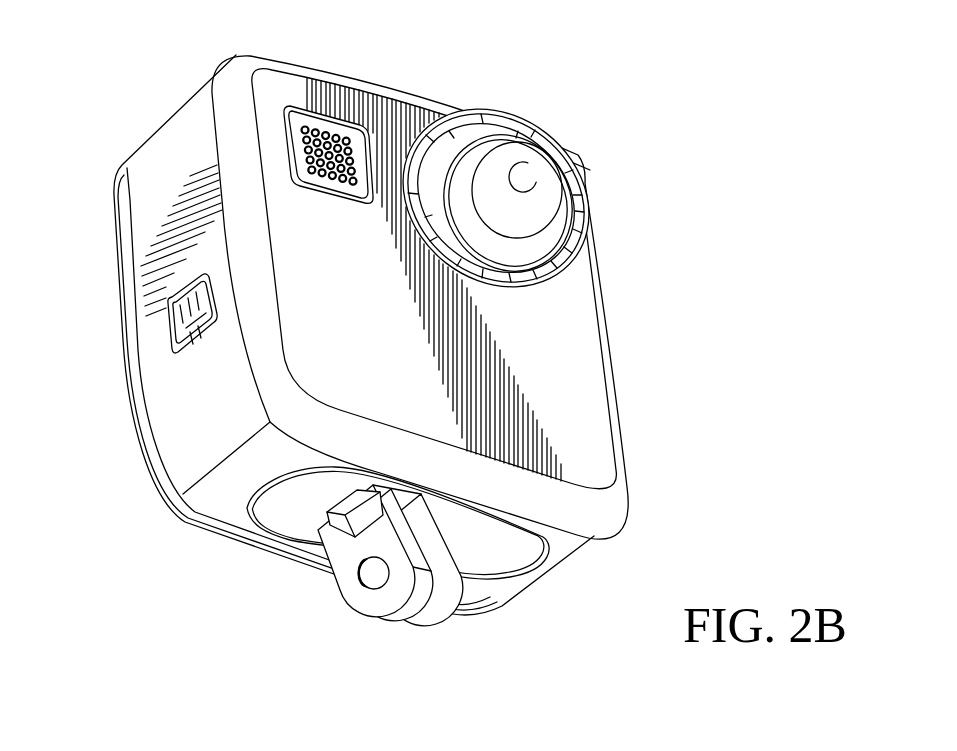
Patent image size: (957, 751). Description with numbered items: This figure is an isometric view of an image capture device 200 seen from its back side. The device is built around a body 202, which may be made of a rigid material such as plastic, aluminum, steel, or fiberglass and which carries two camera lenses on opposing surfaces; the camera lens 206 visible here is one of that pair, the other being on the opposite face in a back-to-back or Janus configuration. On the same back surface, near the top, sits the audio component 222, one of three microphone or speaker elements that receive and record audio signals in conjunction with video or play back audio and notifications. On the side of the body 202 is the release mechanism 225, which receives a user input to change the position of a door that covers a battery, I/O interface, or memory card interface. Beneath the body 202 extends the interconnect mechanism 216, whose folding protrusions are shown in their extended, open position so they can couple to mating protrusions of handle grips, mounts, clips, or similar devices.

The image capture device 200 is at (626, 118).
The body 202 is at (611, 337).
The camera lens 206 is at (527, 181).
The interconnect mechanism 216 is at (347, 565).
The audio component 222 is at (306, 127).
The release mechanism 225 is at (167, 318).